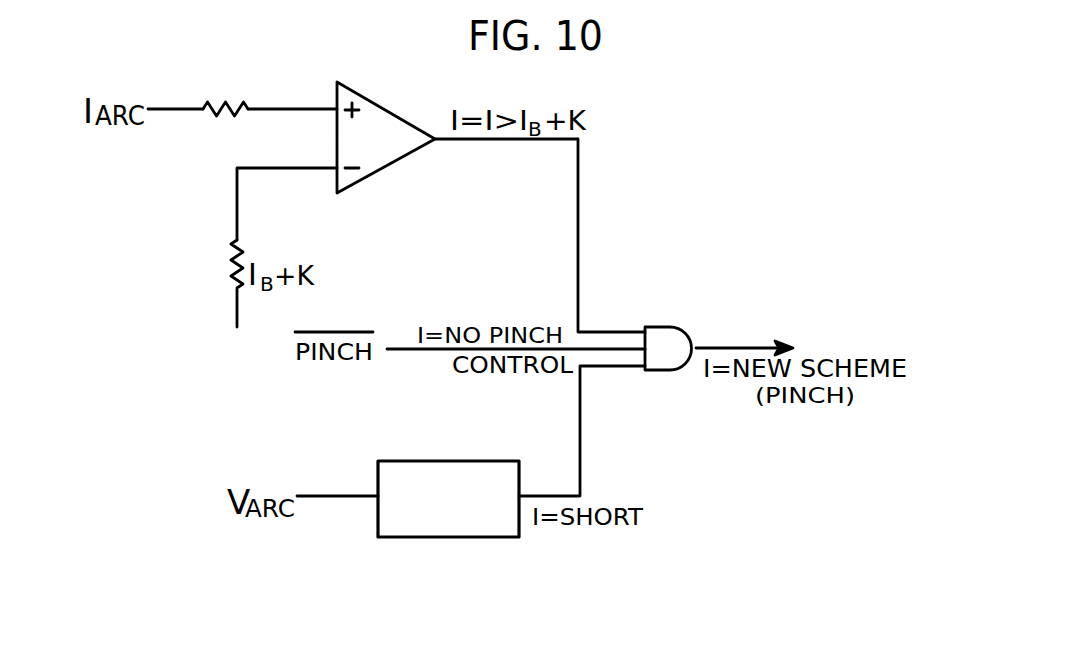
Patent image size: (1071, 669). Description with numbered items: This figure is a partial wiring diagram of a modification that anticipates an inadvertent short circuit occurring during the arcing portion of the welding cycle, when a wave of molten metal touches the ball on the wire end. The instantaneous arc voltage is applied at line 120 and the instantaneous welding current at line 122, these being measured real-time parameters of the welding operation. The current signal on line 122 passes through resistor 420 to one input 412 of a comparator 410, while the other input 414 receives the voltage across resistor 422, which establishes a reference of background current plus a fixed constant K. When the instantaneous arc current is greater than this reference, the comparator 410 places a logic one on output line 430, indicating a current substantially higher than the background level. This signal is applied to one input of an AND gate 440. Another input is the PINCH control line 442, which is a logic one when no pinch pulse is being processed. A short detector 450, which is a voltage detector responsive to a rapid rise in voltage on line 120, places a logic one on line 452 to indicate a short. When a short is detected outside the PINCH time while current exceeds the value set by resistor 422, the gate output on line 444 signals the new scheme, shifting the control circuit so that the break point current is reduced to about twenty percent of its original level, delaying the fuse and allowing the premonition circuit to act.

The line 120 is at (327, 495).
The line 122 is at (178, 109).
The comparator 410 is at (391, 161).
The input 412 is at (297, 108).
The input 414 is at (278, 169).
The resistor 420 is at (217, 110).
The resistor 422 is at (235, 266).
The line 430 is at (580, 187).
The AND gate 440 is at (672, 332).
The PINCH control line 442 is at (433, 350).
The new scheme output line 444 is at (752, 343).
The short detector 450 is at (458, 538).
The line 452 is at (582, 458).